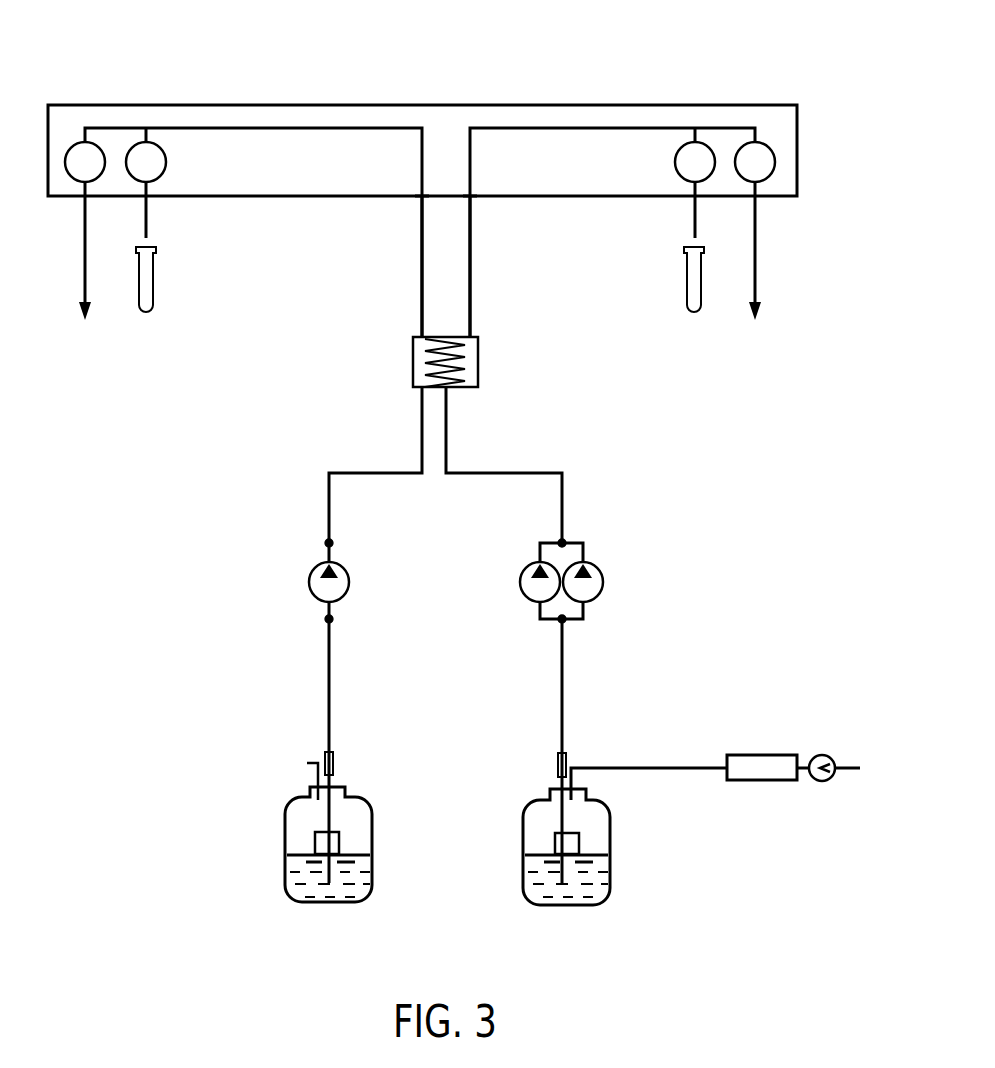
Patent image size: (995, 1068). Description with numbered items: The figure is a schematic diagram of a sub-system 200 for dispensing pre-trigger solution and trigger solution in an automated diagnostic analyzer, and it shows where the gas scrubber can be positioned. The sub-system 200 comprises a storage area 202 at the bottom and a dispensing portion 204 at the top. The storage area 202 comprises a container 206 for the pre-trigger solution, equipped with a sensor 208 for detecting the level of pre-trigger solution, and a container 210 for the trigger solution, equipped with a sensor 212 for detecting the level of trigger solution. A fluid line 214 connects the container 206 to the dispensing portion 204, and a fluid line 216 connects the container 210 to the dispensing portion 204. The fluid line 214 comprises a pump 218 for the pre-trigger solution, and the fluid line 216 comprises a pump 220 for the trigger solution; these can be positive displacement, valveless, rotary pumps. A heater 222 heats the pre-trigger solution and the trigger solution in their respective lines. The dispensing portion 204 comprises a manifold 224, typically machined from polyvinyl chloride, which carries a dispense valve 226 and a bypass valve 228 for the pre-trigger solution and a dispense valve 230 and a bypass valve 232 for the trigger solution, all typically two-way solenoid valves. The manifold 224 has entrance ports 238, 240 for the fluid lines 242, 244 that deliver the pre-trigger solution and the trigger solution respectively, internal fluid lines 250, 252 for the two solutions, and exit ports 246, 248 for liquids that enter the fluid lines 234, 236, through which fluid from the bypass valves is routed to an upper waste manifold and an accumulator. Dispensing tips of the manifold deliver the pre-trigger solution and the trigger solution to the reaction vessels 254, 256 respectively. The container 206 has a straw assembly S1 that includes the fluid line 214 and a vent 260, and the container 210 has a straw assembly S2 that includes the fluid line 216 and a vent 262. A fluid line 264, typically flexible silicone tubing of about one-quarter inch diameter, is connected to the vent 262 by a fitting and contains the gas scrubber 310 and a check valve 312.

The sub-system 200 is at (543, 72).
The storage area 202 is at (432, 918).
The dispensing portion 204 is at (328, 66).
The container 206 is at (300, 880).
The sensor 208 is at (320, 838).
The container 210 is at (595, 880).
The sensor 212 is at (580, 840).
The fluid line 214 is at (328, 690).
The fluid line 216 is at (564, 690).
The pump 218 is at (312, 588).
The pump 220 is at (592, 588).
The heater 222 is at (412, 360).
The manifold 224 is at (443, 104).
The dispense valve 226 is at (160, 158).
The bypass valve 228 is at (76, 147).
The dispense valve 230 is at (708, 152).
The bypass valve 232 is at (768, 152).
The fluid line 234 is at (87, 282).
The fluid line 236 is at (757, 277).
The entrance port 238 is at (420, 200).
The entrance port 240 is at (472, 200).
The fluid line 242 is at (420, 283).
The fluid line 244 is at (472, 297).
The exit port 246 is at (87, 197).
The exit port 248 is at (757, 197).
The fluid line 250 is at (318, 135).
The fluid line 252 is at (538, 135).
The reaction vessel 254 is at (156, 282).
The reaction vessel 256 is at (685, 282).
The vent 260 is at (310, 762).
The vent 262 is at (578, 762).
The fluid line 264 is at (653, 765).
The gas scrubber 310 is at (762, 772).
The check valve 312 is at (827, 783).
The straw assembly S1 is at (375, 797).
The straw assembly S2 is at (525, 797).